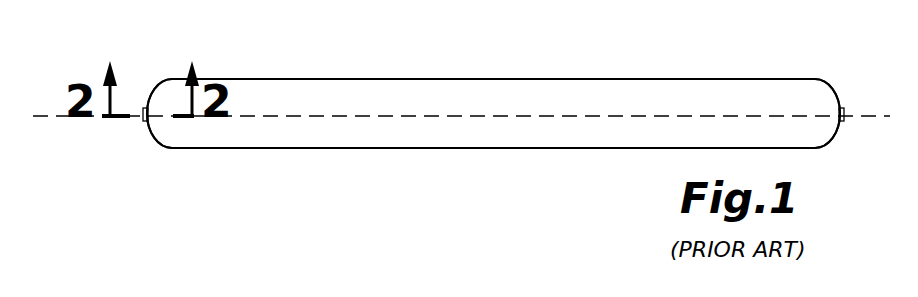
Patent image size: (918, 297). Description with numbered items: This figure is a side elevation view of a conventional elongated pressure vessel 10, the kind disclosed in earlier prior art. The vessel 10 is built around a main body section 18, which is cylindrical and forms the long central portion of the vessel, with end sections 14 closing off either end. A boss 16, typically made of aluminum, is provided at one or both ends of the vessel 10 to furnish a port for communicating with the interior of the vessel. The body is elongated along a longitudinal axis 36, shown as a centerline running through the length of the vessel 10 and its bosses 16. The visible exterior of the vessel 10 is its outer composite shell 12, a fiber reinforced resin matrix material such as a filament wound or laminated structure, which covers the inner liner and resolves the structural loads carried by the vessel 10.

The elongated pressure vessel 10 is at (635, 79).
The outer composite shell 12 is at (435, 98).
The end sections 14 is at (163, 93).
The boss 16 is at (147, 122).
The main body section 18 is at (358, 107).
The longitudinal axis 36 is at (43, 123).